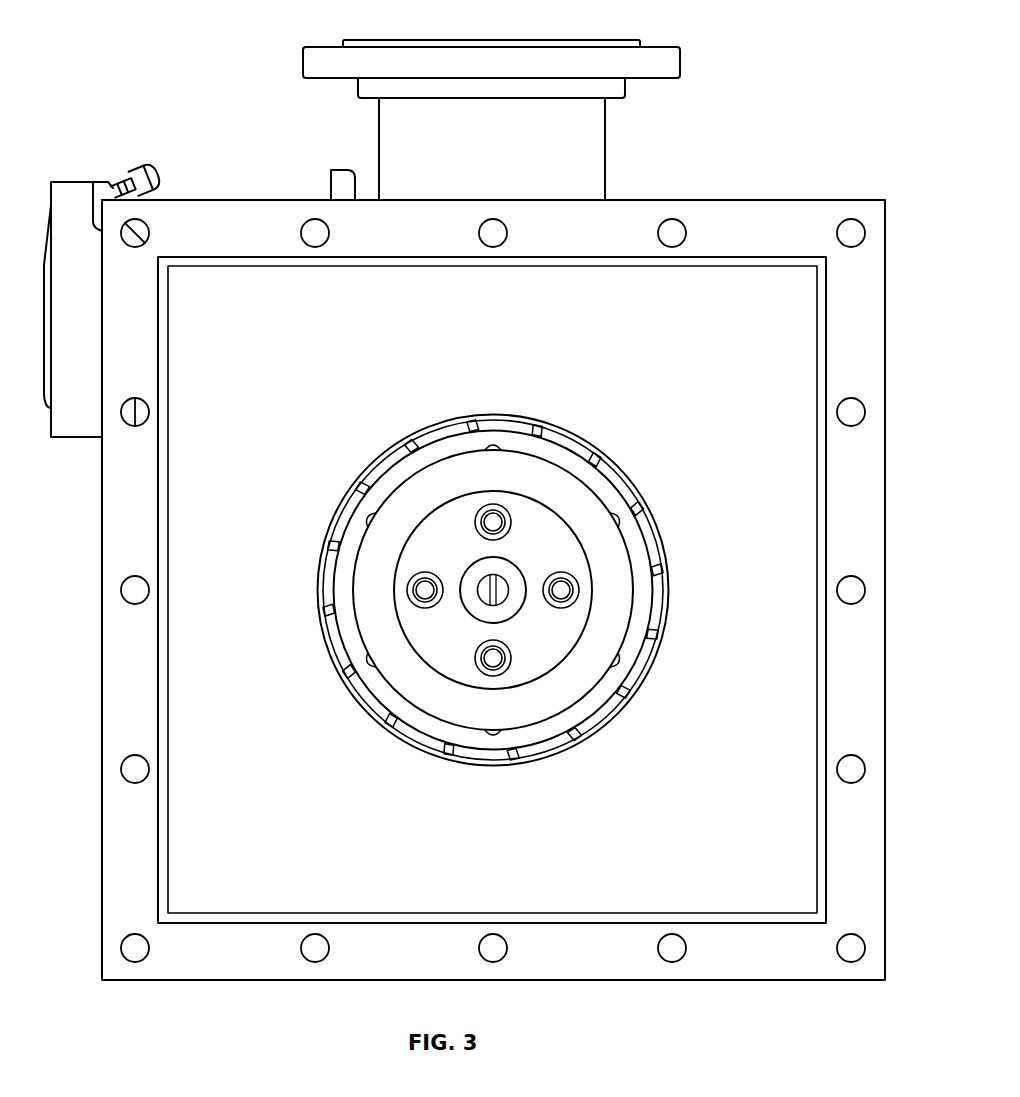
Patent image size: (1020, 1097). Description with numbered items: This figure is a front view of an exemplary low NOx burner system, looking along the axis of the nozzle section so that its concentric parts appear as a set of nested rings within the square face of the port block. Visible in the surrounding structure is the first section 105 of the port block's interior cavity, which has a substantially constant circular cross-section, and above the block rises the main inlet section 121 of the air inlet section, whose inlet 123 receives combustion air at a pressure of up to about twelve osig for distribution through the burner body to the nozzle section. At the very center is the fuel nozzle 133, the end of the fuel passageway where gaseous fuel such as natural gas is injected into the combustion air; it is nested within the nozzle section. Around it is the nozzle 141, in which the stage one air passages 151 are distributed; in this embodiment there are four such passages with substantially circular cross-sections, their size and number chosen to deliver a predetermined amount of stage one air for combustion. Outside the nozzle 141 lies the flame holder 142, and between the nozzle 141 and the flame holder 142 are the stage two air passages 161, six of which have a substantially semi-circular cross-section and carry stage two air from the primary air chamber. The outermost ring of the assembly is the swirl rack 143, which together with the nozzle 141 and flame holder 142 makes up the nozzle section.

The first section 105 is at (180, 828).
The main inlet section 121 is at (605, 148).
The inlet 123 is at (543, 38).
The fuel nozzle 133 is at (503, 597).
The nozzle 141 is at (580, 573).
The flame holder 142 is at (567, 446).
The swirl rack 143 is at (378, 463).
The stage 1 air passages 151 is at (494, 522).
The stage 2 air passages 161 is at (642, 510).